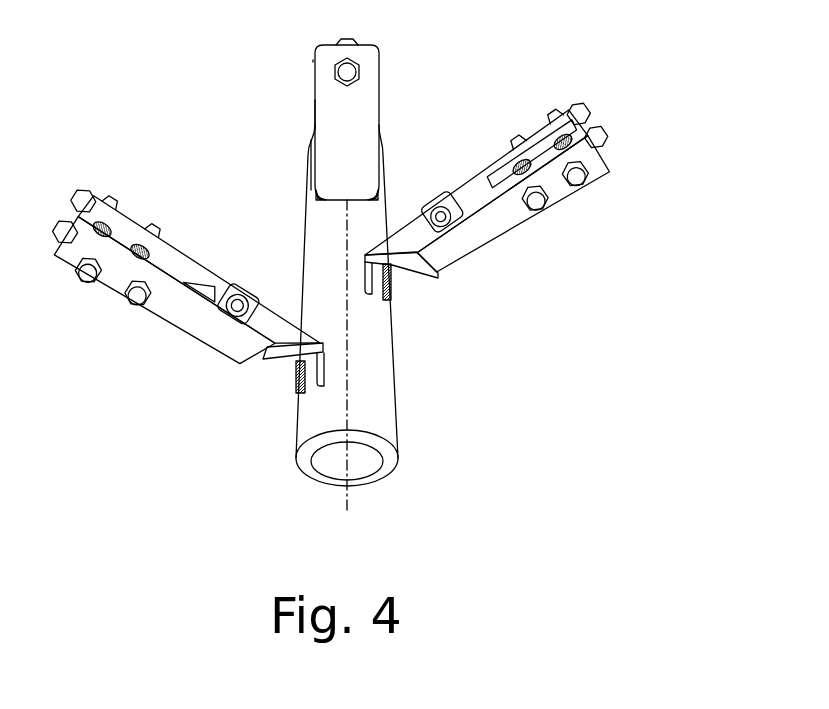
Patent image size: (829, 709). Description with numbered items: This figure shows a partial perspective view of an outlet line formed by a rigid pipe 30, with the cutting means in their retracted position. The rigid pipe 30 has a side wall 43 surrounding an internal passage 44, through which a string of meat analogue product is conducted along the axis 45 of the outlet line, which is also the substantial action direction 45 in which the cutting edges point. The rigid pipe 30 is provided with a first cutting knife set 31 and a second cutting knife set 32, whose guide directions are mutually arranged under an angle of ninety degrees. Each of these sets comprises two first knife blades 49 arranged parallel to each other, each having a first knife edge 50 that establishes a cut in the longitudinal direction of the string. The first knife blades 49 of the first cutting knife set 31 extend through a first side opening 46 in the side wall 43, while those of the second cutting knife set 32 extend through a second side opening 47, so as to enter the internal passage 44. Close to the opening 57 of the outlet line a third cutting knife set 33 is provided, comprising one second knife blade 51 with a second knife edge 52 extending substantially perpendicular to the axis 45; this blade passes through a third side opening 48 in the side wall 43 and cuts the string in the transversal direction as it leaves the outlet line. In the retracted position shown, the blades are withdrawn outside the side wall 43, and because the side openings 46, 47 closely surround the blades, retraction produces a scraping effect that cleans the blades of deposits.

The rigid pipe 30 is at (398, 380).
The first cutting knife set 31 is at (180, 214).
The second cutting knife set 32 is at (586, 210).
The third cutting knife set 33 is at (400, 62).
The side wall 43 is at (392, 455).
The internal passage 44 is at (330, 465).
The action direction / axis of the outlet line 45 is at (348, 496).
The first side opening 46 is at (300, 388).
The second side opening 47 is at (392, 296).
The third side opening 48 is at (318, 204).
The first knife blade 49 is at (403, 243).
The first knife edge 50 is at (390, 282).
The second knife blade 51 is at (360, 150).
The second knife edge 52 is at (312, 198).
The opening of the outlet line 57 is at (313, 131).